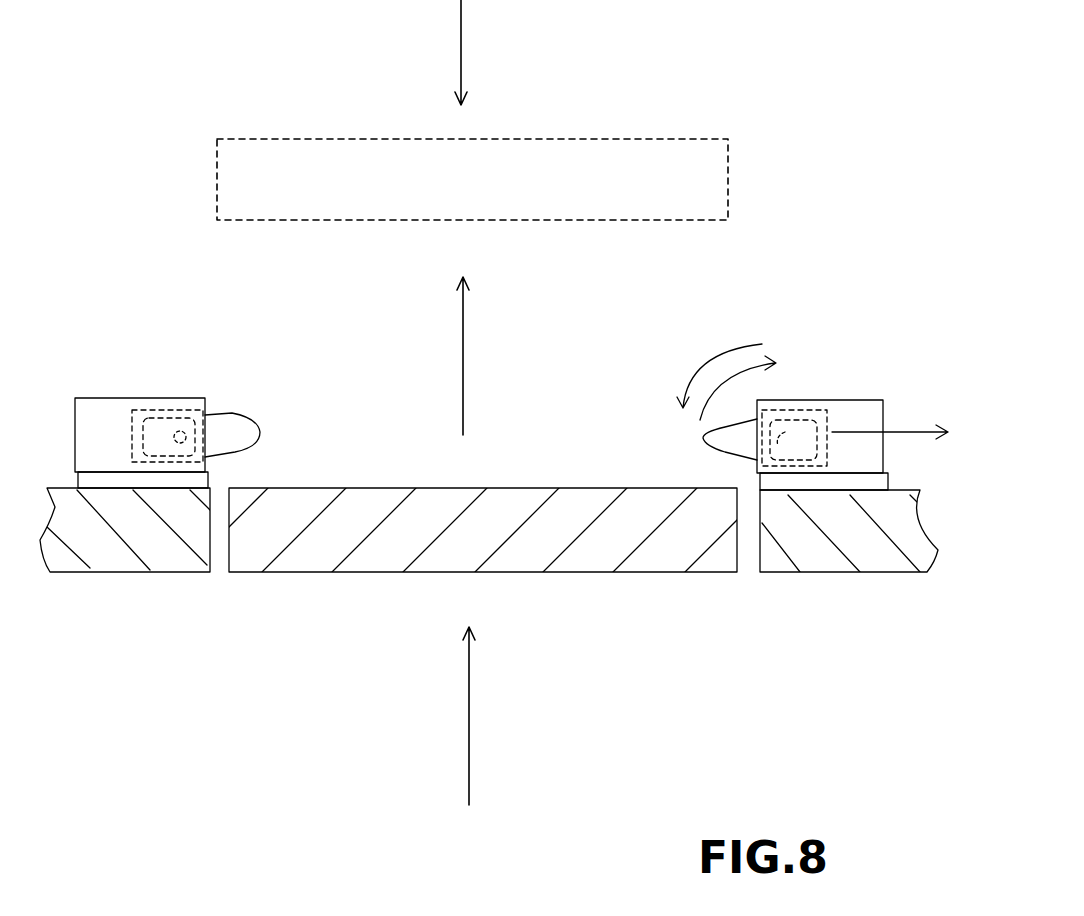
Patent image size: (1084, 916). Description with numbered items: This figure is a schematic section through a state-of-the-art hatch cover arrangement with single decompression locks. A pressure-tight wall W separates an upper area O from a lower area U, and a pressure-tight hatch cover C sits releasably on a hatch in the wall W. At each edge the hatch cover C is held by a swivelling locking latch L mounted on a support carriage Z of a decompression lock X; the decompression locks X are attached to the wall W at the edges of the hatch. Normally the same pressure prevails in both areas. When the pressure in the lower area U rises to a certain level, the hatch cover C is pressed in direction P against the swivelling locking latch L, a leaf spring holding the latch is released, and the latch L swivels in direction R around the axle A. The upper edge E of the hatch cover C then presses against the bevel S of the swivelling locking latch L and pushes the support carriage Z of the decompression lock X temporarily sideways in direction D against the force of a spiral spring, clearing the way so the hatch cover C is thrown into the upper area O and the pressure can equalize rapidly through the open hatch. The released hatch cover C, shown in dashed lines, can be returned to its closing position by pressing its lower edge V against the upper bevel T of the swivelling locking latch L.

The lower edge V is at (732, 222).
The direction P is at (494, 402).
The hatch cover C is at (313, 600).
The wall W is at (155, 600).
The axle A is at (780, 443).
The swivelling locking latch L is at (703, 440).
The bevel S is at (742, 460).
The upper edge E is at (730, 497).
The upper area O is at (681, 331).
The swivel direction R is at (731, 382).
The upper bevel T is at (740, 400).
The decompression lock X is at (868, 412).
The sideways direction D is at (892, 413).
The support carriage Z is at (825, 443).
The lower area U is at (701, 659).